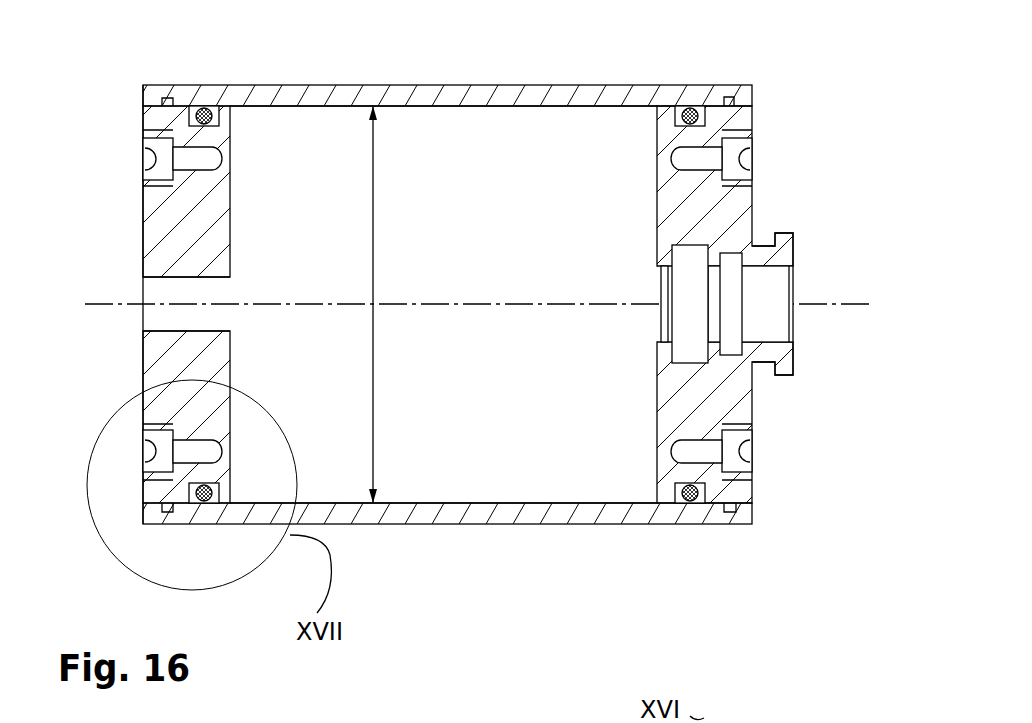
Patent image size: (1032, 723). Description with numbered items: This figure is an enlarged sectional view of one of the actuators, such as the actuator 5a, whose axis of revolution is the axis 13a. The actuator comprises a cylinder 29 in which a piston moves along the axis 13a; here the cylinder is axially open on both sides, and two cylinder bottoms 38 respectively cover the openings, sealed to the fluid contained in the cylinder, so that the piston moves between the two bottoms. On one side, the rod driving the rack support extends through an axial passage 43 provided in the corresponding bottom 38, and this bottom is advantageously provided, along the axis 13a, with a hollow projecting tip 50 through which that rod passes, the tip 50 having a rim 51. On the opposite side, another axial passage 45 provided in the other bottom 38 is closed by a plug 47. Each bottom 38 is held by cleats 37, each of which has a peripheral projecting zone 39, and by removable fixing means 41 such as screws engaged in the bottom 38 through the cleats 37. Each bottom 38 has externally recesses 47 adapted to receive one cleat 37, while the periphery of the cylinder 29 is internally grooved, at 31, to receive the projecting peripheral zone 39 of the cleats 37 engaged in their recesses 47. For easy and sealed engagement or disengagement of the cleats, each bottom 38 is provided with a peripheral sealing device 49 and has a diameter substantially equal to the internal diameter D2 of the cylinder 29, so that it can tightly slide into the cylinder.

The actuator 5a is at (750, 70).
The cylinder 29 is at (462, 100).
The cylinder bottom 38 is at (222, 200).
The cleat 37 is at (145, 208).
The removable fixing means 41 is at (145, 118).
The recess 47 is at (212, 129).
The peripheral sealing device 49 is at (690, 110).
The peripheral projecting zone 39 is at (167, 100).
The internal groove 31 is at (167, 514).
The axial passage 45 is at (147, 317).
The axial passage 43 is at (762, 293).
The hollow projecting tip 50 is at (768, 318).
The rim 51 is at (782, 238).
The axis 13a is at (473, 305).
The internal diameter of the cylinder D2 is at (397, 304).